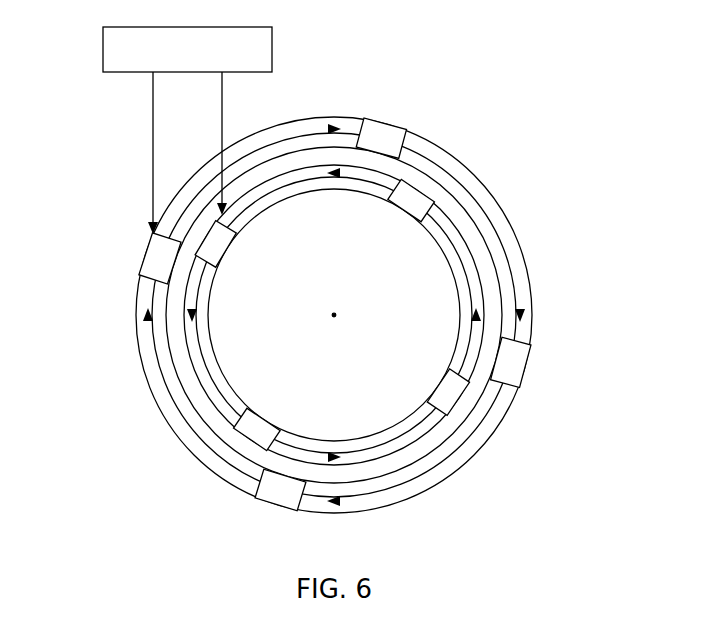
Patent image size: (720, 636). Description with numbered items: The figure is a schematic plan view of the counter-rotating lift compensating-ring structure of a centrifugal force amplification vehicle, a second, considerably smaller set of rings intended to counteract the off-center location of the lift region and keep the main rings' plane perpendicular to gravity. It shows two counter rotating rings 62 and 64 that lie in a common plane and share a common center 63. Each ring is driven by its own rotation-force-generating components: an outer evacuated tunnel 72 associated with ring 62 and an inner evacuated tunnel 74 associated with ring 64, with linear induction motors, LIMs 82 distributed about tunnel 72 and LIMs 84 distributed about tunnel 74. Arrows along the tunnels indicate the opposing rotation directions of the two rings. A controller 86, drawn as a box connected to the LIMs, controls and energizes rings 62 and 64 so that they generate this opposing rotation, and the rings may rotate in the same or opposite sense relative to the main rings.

The counter rotating ring 62 is at (156, 400).
The common center 63 is at (335, 313).
The counter rotating ring 64 is at (201, 277).
The evacuated tunnel 72 is at (453, 474).
The evacuated tunnel 74 is at (346, 440).
The LIM 82 is at (380, 123).
The LIM 84 is at (231, 238).
The controller 86 is at (103, 50).